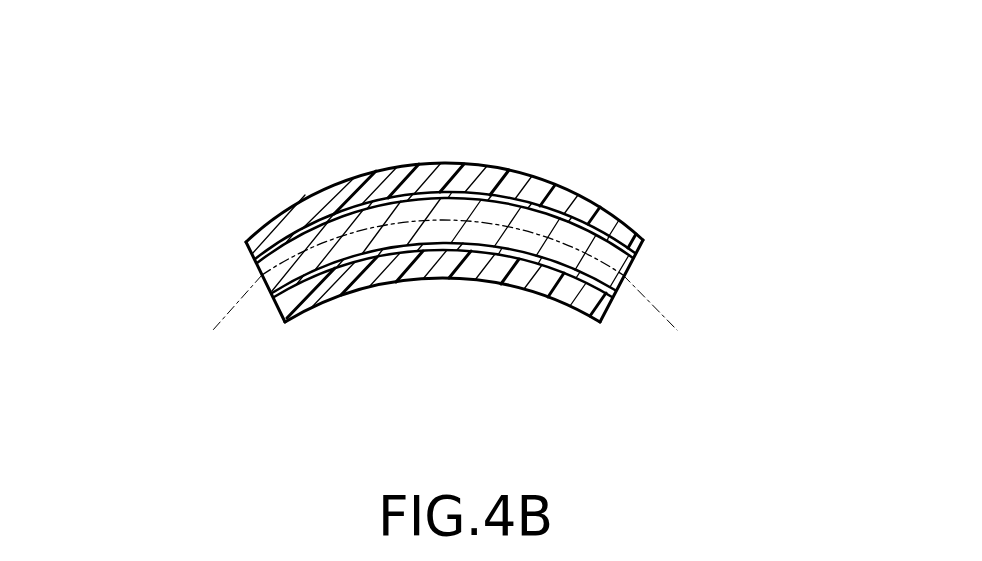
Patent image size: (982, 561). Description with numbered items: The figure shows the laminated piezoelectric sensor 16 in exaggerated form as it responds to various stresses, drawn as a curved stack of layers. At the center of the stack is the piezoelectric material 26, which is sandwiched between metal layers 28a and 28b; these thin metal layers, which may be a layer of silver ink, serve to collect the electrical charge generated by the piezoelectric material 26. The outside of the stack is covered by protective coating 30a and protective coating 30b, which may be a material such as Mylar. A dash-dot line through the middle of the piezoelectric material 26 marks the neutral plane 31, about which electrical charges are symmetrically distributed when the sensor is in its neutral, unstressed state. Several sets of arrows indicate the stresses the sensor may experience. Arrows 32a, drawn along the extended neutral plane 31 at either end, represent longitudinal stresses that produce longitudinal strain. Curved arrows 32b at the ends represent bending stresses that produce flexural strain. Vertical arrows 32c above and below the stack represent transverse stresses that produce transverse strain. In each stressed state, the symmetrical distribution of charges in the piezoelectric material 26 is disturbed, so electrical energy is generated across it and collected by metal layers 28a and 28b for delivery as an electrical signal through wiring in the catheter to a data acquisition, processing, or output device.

The piezoelectric sensor 16 is at (655, 122).
The piezoelectric material 26 is at (628, 275).
The metal layer 28a is at (250, 260).
The metal layer 28b is at (267, 308).
The protective coating 30a is at (353, 177).
The protective coating 30b is at (332, 303).
The neutral plane 31 is at (240, 302).
The arrows 32a is at (745, 400).
The arrows 32b is at (756, 456).
The arrows 32c is at (443, 320).